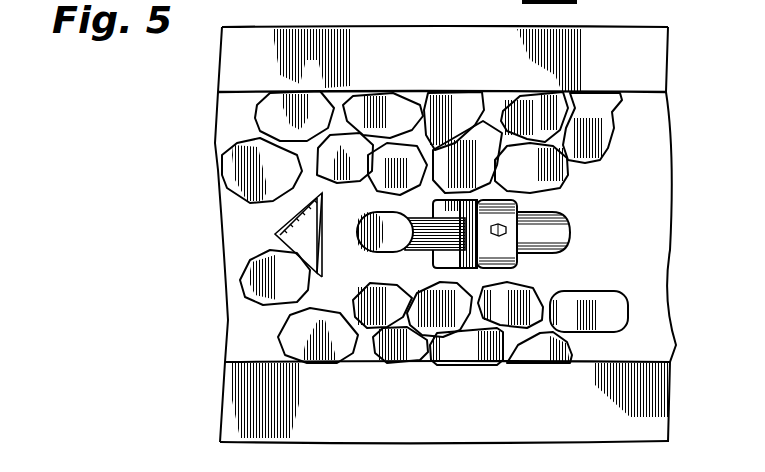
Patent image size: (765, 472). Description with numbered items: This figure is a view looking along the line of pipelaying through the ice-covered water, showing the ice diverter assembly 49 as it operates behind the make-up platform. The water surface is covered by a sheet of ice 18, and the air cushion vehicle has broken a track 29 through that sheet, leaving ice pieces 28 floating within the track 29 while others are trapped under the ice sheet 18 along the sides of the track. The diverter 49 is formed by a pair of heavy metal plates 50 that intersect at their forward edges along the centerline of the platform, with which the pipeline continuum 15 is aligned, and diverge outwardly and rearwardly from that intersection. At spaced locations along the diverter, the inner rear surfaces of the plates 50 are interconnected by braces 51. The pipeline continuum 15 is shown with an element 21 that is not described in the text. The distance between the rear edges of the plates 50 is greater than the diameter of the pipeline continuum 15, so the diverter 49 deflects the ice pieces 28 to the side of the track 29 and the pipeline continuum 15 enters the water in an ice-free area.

The sheet of ice 18 is at (237, 72).
The track of broken ice 29 is at (237, 93).
The ice pieces 28 is at (248, 158).
The ice diverter assembly 49 is at (266, 238).
The heavy metal plates 50 is at (283, 228).
The braces 51 is at (322, 243).
The pipeline continuum 15 is at (570, 218).
The nut and washer plate 21 is at (515, 258).